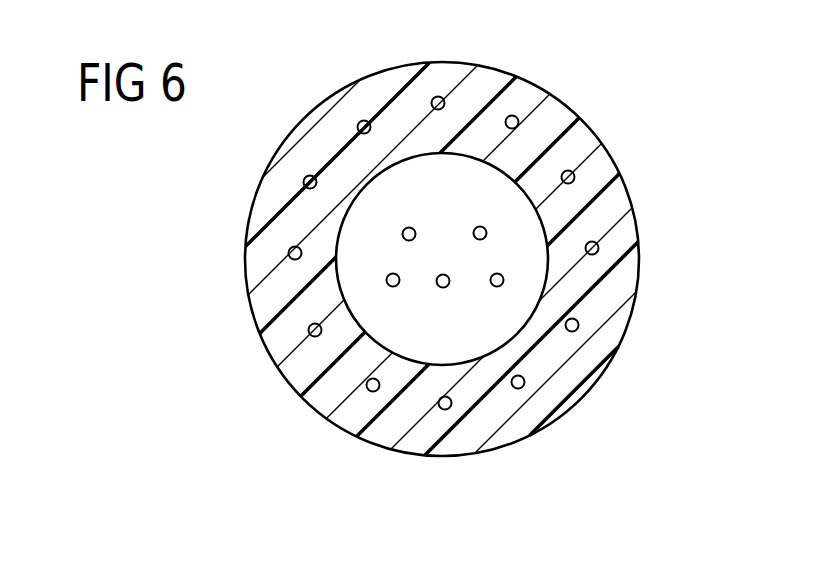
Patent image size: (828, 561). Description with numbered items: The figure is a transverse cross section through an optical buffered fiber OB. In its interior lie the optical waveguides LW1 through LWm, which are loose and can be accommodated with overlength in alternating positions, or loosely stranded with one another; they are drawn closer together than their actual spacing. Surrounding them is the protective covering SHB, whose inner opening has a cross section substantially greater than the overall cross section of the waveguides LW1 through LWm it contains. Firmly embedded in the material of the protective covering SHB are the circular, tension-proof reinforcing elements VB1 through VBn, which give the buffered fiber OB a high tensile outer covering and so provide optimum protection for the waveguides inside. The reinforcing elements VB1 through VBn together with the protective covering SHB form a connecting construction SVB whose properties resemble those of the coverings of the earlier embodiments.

The optical buffered fiber OB is at (634, 203).
The protective covering SHB is at (627, 273).
The connecting construction SVB is at (458, 112).
The first reinforcing element VB1 is at (519, 120).
The n-th reinforcing element VBn is at (579, 328).
The first optical waveguide LW1 is at (440, 287).
The m-th optical waveguide LWm is at (495, 287).